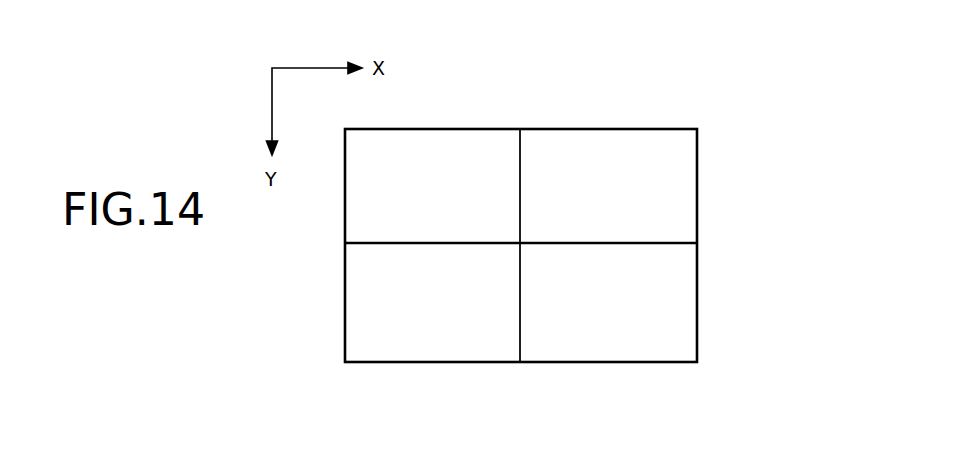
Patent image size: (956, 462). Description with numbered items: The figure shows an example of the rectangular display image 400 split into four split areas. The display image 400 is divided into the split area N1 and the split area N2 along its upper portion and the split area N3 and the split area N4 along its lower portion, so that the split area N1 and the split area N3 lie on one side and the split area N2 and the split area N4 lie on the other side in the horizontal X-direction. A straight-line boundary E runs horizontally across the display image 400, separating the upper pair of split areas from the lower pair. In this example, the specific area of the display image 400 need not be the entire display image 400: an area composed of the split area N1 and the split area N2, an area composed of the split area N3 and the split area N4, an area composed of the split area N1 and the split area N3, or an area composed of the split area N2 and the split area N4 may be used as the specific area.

The display image 400 is at (688, 151).
The boundary E is at (397, 245).
The split area N1 is at (383, 213).
The split area N2 is at (666, 206).
The split area N3 is at (383, 337).
The split area N4 is at (665, 327).